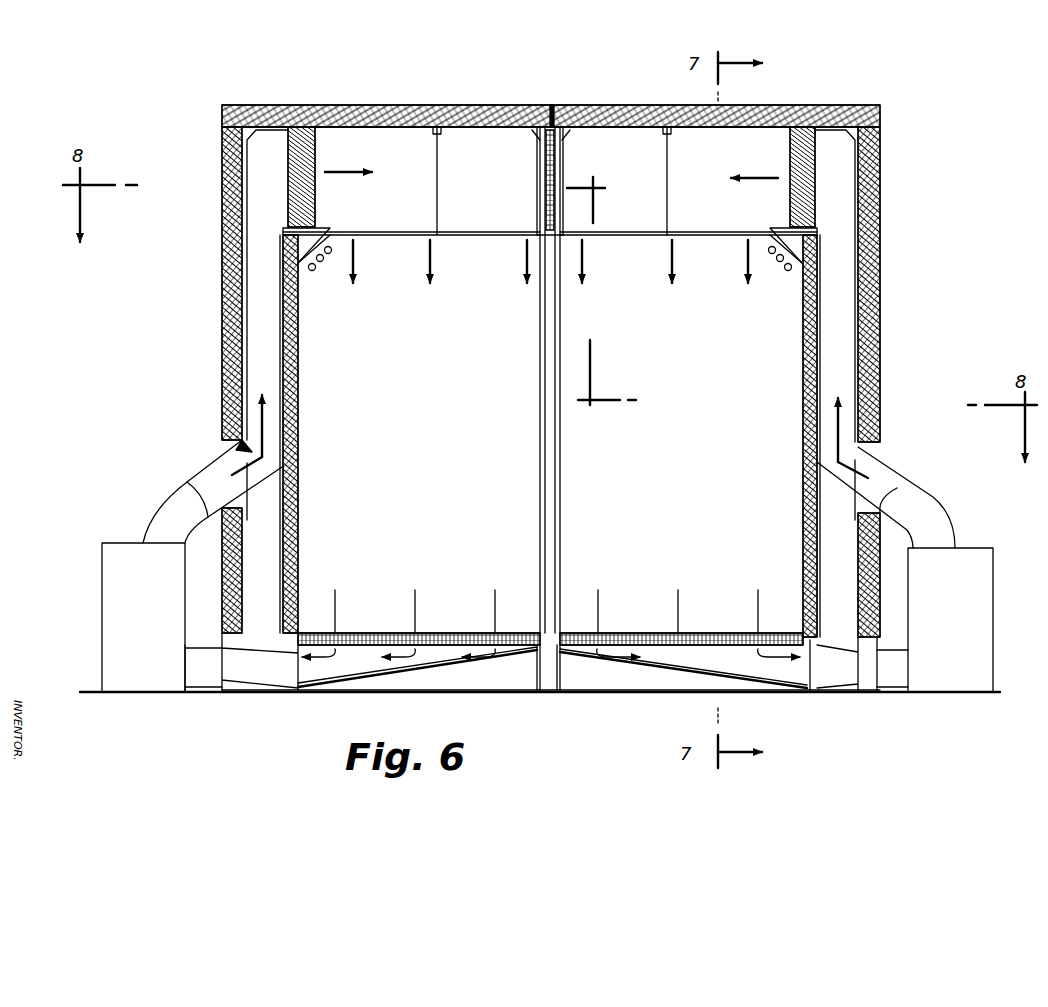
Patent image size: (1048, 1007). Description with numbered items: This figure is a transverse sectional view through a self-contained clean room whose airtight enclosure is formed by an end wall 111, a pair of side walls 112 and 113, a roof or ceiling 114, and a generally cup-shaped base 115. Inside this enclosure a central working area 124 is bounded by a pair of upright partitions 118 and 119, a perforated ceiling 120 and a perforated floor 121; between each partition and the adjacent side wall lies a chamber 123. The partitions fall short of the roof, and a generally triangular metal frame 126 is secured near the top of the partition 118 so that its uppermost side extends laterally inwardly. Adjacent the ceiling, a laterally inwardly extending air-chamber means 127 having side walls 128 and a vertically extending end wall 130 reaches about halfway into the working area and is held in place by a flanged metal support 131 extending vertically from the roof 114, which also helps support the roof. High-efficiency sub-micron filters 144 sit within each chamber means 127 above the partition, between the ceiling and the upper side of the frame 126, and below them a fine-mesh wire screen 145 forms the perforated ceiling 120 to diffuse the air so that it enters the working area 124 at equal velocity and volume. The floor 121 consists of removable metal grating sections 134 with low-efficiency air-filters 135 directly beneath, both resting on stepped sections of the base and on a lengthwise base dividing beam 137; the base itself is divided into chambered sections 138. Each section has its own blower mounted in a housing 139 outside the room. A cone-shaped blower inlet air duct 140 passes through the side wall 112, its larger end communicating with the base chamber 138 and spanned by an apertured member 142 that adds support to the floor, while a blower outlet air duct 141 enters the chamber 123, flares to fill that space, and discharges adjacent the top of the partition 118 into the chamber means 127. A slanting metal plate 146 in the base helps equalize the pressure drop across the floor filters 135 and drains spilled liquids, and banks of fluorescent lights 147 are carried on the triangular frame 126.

The end wall 111 is at (419, 434).
The side wall 112 is at (874, 310).
The side wall 113 is at (222, 300).
The roof or ceiling 114 is at (503, 106).
The base 115 is at (485, 698).
The partition 118 is at (803, 380).
The partition 119 is at (298, 380).
The perforated ceiling 120 is at (502, 238).
The perforated floor 121 is at (380, 630).
The chamber 123 is at (550, 435).
The working area 124 is at (681, 434).
The triangular metal frame 126 is at (305, 270).
The air-chamber means 127 is at (398, 131).
The side wall of air-chamber means 128 is at (459, 181).
The end wall of air-chamber means 130 is at (540, 200).
The flanged metal support 131 is at (560, 150).
The metal grating sections 134 is at (478, 633).
The air-filters 135 is at (668, 633).
The base dividing beam 137 is at (540, 670).
The chambered section 138 is at (683, 666).
The housing 139 is at (125, 548).
The blower inlet air duct 140 is at (192, 680).
The blower outlet air duct 141 is at (215, 460).
The apertured member 142 is at (290, 680).
The high-efficiency sub-micron filters 144 is at (315, 198).
The fine-mesh wire screen 145 is at (648, 240).
The slanting metal plate 146 is at (636, 665).
The fluorescent lights 147 is at (790, 272).